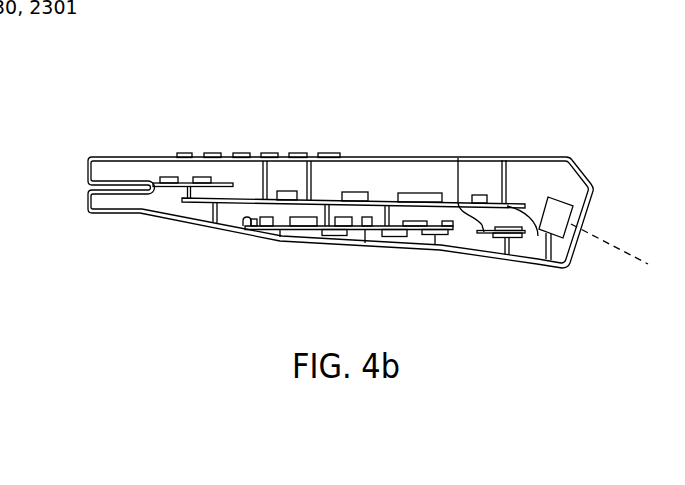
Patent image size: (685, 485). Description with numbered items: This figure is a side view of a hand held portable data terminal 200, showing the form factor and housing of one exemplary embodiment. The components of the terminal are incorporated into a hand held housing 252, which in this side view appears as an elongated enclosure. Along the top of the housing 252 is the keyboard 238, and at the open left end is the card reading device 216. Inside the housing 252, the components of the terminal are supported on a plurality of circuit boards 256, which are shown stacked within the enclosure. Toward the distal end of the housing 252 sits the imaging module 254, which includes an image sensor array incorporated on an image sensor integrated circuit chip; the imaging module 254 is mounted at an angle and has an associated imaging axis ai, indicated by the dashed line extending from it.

The terminal 200 is at (524, 74).
The card reading device 216 is at (78, 186).
The keyboard 238 is at (226, 146).
The hand held housing 252 is at (556, 156).
The imaging module 254 is at (563, 196).
The circuit boards 256 is at (458, 158).
The imaging axis ai is at (627, 257).